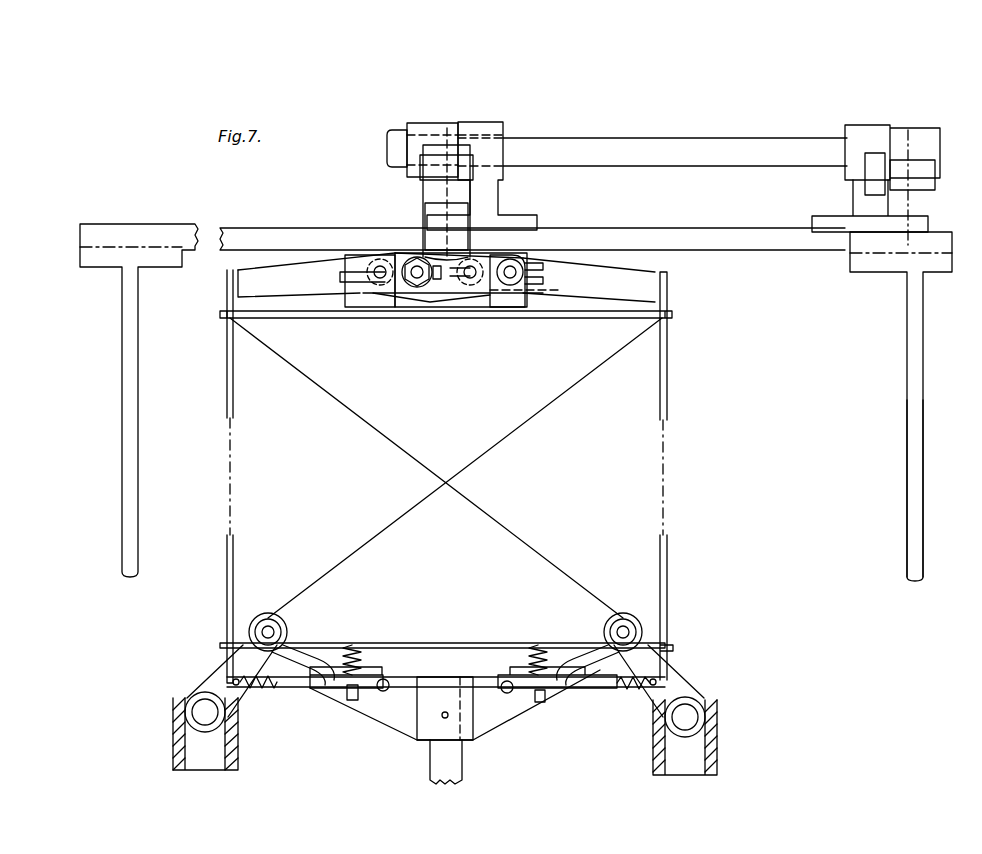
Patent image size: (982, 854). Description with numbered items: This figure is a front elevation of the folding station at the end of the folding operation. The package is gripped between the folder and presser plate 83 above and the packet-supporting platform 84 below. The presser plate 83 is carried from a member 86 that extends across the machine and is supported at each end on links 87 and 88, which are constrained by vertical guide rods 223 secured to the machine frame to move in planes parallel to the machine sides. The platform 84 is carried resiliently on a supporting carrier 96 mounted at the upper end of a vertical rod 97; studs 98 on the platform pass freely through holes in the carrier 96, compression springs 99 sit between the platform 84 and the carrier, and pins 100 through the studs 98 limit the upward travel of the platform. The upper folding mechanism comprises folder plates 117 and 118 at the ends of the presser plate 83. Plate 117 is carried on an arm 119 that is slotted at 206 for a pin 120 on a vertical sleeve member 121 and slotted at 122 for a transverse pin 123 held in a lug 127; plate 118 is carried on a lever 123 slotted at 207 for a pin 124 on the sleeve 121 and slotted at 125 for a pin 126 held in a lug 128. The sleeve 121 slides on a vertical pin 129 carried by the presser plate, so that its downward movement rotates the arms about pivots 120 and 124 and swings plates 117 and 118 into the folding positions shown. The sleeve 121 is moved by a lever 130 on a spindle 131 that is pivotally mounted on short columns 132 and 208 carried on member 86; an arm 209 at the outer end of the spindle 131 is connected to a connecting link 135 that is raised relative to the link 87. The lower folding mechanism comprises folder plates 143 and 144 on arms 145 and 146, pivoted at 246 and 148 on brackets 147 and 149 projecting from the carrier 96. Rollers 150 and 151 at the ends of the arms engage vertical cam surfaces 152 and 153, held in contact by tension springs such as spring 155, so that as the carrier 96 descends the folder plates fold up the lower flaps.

The folder and presser plate 83 is at (586, 319).
The packet-supporting platform 84 is at (447, 643).
The transversely extending member 86 is at (796, 247).
The link 87 is at (907, 338).
The link 88 is at (140, 431).
The supporting carrier 96 is at (480, 678).
The vertical rod 97 is at (437, 758).
The studs 98 is at (345, 690).
The compression springs 99 is at (381, 692).
The pins 100 is at (352, 700).
The folder plate 117 is at (668, 365).
The folder plate 118 is at (226, 357).
The arm 119 is at (630, 277).
The pin 120 is at (453, 269).
The vertical sleeve member 121 is at (422, 232).
The slot 122 is at (348, 262).
The lever 123 is at (270, 270).
The pin 124 is at (418, 287).
The slot 125 is at (540, 262).
The pin 126 is at (530, 300).
The lug 127 is at (365, 298).
The lug 128 is at (533, 291).
The vertical pin 129 is at (458, 292).
The lever 130 is at (450, 140).
The spindle 131 is at (645, 150).
The short column 132 is at (500, 192).
The connecting link 135 is at (924, 455).
The folder plate 143 is at (668, 580).
The folder plate 144 is at (226, 580).
The arm 145 is at (672, 680).
The arm 146 is at (218, 667).
The bracket 147 is at (577, 642).
The pivot 148 is at (268, 613).
The bracket 149 is at (305, 640).
The roller 150 is at (706, 703).
The roller 151 is at (195, 699).
The cam surface 152 is at (655, 742).
The cam surface 153 is at (233, 748).
The tension spring 155 is at (268, 690).
The slot 206 is at (490, 297).
The slot 207 is at (439, 295).
The short column 208 is at (866, 188).
The arm 209 is at (900, 185).
The vertical guide rods 223 is at (340, 277).
The pivot 246 is at (624, 613).